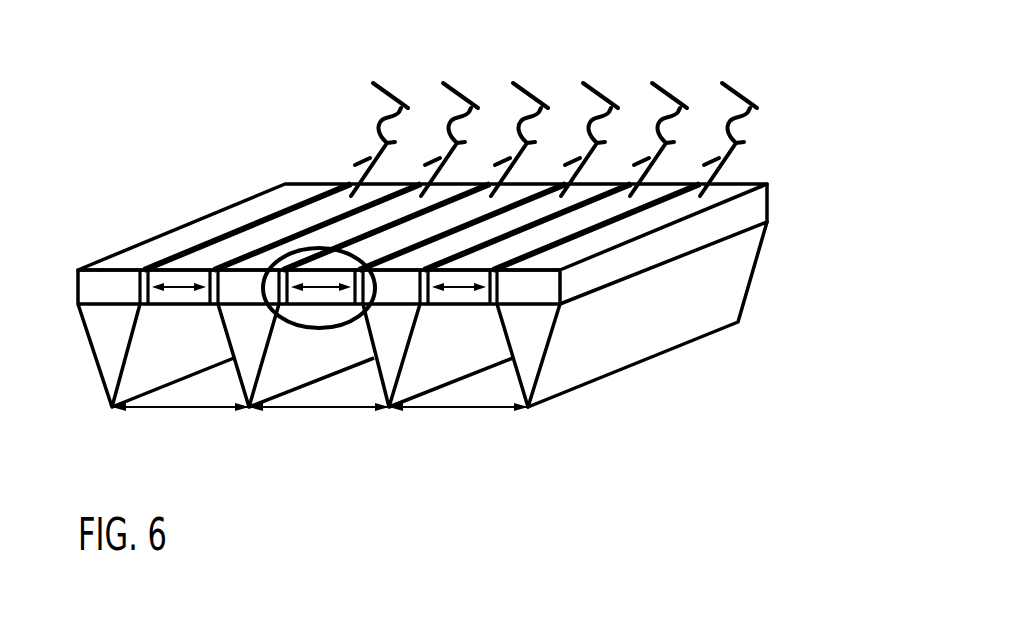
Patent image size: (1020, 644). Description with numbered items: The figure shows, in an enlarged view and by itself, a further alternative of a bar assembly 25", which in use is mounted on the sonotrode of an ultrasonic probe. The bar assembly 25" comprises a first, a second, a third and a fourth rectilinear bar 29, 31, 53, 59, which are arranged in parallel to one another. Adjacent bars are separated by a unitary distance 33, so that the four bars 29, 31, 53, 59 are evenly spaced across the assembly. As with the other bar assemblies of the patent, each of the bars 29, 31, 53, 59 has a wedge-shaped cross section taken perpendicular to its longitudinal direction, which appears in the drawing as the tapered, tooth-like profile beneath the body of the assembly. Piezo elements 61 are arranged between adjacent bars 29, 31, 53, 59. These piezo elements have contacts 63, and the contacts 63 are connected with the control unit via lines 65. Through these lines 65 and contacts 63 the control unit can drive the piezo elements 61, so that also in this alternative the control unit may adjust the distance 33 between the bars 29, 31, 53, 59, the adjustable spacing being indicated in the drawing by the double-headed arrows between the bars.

The bar assembly 25 is at (684, 391).
The first rectilinear bar 29 is at (104, 400).
The second rectilinear bar 31 is at (285, 383).
The unitary distance 33 is at (206, 412).
The third rectilinear bar 53 is at (424, 383).
The fourth rectilinear bar 59 is at (537, 363).
The piezo elements 61 is at (258, 194).
The contacts 63 is at (215, 267).
The lines 65 is at (449, 102).